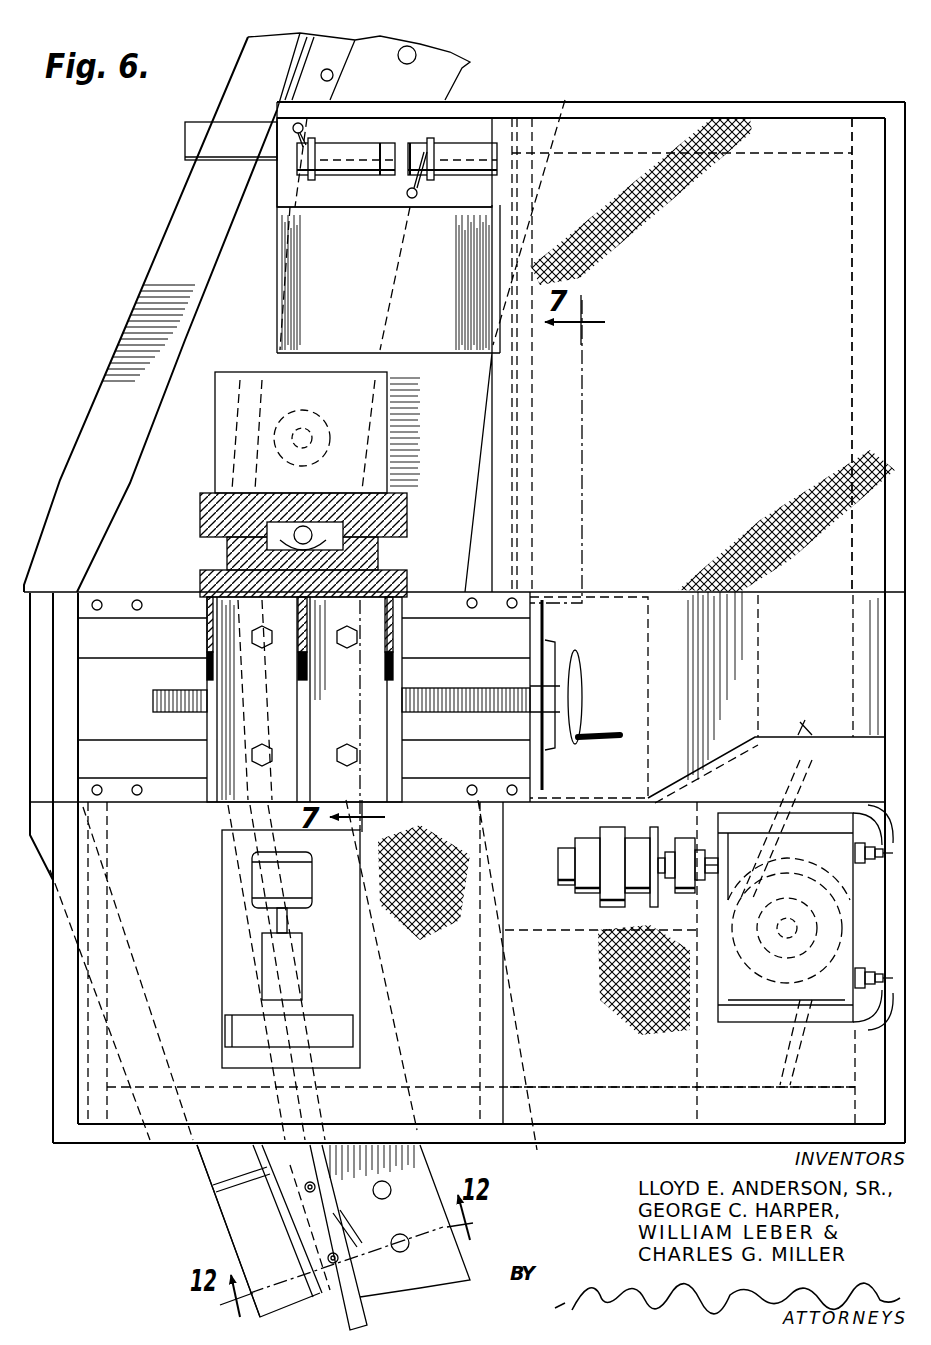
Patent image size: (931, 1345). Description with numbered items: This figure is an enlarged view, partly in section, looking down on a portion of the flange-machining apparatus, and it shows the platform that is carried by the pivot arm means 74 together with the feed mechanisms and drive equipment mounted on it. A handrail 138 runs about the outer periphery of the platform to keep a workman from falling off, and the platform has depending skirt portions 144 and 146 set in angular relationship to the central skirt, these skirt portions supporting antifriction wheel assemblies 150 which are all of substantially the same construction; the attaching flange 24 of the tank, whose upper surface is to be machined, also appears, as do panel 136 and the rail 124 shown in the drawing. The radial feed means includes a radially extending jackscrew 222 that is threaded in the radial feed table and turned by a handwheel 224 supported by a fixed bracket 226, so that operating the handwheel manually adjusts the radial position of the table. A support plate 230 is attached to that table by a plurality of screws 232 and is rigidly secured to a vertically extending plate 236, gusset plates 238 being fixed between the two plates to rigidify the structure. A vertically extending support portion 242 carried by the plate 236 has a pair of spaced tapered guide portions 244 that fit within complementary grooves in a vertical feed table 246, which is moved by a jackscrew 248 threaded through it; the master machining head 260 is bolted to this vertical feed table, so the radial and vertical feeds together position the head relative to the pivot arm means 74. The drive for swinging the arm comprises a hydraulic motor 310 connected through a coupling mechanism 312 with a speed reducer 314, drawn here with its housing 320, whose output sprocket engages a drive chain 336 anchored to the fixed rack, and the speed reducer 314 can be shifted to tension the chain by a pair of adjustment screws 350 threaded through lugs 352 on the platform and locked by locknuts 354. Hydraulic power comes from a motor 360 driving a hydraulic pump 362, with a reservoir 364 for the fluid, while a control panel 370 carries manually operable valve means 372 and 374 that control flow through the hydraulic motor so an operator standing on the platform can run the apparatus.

The attaching flange 24 is at (422, 1160).
The pivot arm means 74 is at (647, 556).
The track rail 124 is at (808, 745).
The panel 136 is at (752, 287).
The handrail 138 is at (722, 104).
The depending skirt portion 144 is at (208, 1160).
The depending skirt portion 146 is at (155, 266).
The antifriction wheel assemblies 150 is at (242, 60).
The jackscrew 222 is at (160, 708).
The handwheel 224 is at (578, 686).
The fixed bracket 226 is at (548, 632).
The support plate 230 is at (238, 776).
The screws 232 is at (347, 744).
The vertically extending plate 236 is at (205, 600).
The gusset plates 238 is at (205, 642).
The vertically extending support portion 242 is at (380, 550).
The tapered guide portions 244 is at (407, 522).
The vertical feed table 246 is at (410, 500).
The jackscrew 248 is at (303, 525).
The master machining head 260 is at (210, 458).
The hydraulic motor 310 is at (593, 912).
The coupling mechanism 312 is at (680, 830).
The speed reducer 314 is at (779, 1028).
The motor 320 is at (785, 917).
The drive chain 336 is at (682, 1099).
The adjustment screws 350 is at (852, 806).
The lugs 352 is at (860, 866).
The locknuts 354 is at (868, 805).
The motor 360 is at (258, 875).
The hydraulic pump 362 is at (275, 950).
The reservoir 364 is at (240, 1030).
The control panel 370 is at (433, 218).
The manually operable valve means 372 is at (300, 170).
The manually operable valve means 374 is at (432, 150).